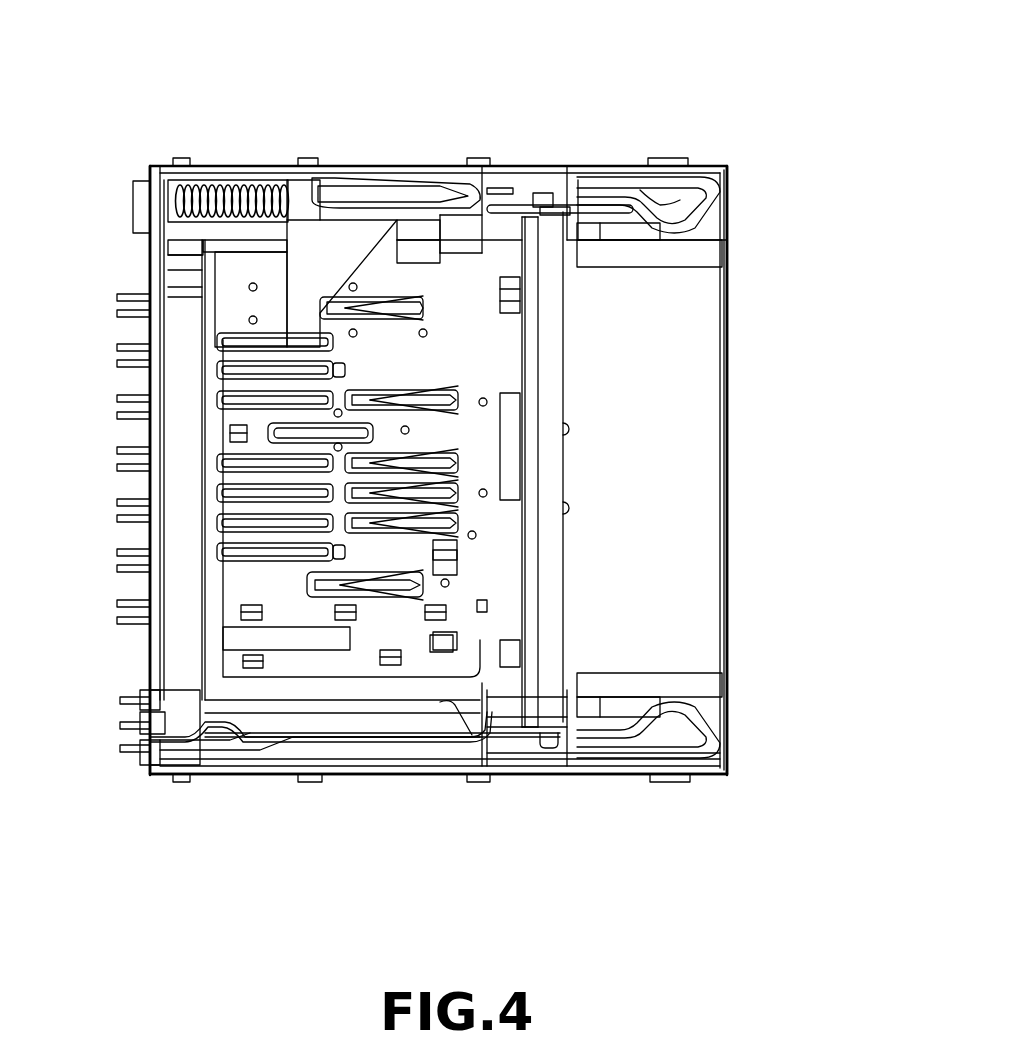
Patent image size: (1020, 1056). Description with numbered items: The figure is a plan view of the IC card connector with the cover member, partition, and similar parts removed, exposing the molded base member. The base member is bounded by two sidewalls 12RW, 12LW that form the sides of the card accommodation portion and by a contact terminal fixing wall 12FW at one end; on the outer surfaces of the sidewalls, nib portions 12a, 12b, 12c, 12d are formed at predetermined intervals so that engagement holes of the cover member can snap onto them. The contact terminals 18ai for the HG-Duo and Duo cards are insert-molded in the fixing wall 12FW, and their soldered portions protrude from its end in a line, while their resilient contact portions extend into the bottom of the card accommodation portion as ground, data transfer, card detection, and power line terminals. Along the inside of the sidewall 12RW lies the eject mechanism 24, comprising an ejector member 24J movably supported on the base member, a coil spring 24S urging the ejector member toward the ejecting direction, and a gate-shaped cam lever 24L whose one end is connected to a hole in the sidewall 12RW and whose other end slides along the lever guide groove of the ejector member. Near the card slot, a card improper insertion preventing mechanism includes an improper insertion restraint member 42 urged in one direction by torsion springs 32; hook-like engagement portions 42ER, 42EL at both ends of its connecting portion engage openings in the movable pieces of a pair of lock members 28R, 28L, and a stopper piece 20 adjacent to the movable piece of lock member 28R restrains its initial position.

The eject mechanism 24 is at (383, 145).
The coil spring 24S is at (228, 185).
The ejector member 24J is at (336, 230).
The cam lever 24L is at (405, 198).
The nib portion 12a is at (178, 158).
The nib portion 12b is at (305, 158).
The nib portion 12c is at (478, 158).
The nib portion 12d is at (660, 158).
The contact terminal fixing wall 12FW is at (157, 180).
The sidewall 12RW is at (713, 165).
The sidewall 12LW is at (713, 778).
The lock member 28R is at (710, 210).
The lock member 28L is at (705, 727).
The stopper piece 20 is at (612, 225).
The improper insertion restraint member 42 is at (555, 412).
The engagement portion 42ER is at (540, 195).
The engagement portion 42EL is at (548, 760).
The torsion spring 32 is at (568, 200).
The contact terminals 18ai is at (110, 295).